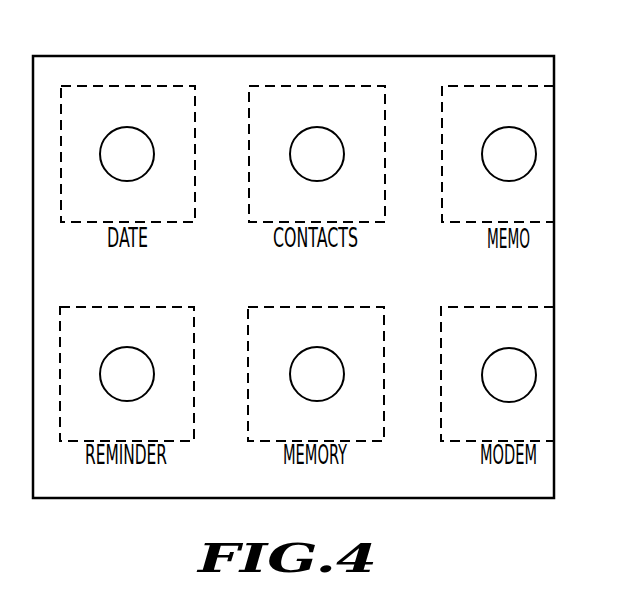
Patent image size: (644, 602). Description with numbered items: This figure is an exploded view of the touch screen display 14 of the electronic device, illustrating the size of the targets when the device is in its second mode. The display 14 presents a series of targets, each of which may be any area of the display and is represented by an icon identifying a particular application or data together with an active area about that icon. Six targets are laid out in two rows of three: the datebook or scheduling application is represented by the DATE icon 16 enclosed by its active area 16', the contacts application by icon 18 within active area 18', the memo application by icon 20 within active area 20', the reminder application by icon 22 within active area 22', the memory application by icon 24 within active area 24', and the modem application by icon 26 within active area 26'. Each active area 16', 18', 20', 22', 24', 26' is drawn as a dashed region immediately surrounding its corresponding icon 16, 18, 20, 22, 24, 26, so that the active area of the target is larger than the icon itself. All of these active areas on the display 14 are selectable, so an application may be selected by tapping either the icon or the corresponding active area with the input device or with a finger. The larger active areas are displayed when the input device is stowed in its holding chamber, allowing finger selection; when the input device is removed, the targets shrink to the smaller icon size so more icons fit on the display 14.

The touch screen display 14 is at (554, 70).
The icon 16 is at (141, 144).
The active area 16' is at (149, 145).
The icon 18 is at (330, 144).
The active area 18' is at (337, 145).
The icon 20 is at (494, 144).
The active area 20' is at (477, 154).
The icon 22 is at (139, 363).
The active area 22' is at (145, 366).
The icon 24 is at (329, 363).
The active area 24' is at (333, 366).
The icon 26 is at (494, 364).
The active area 26' is at (476, 374).